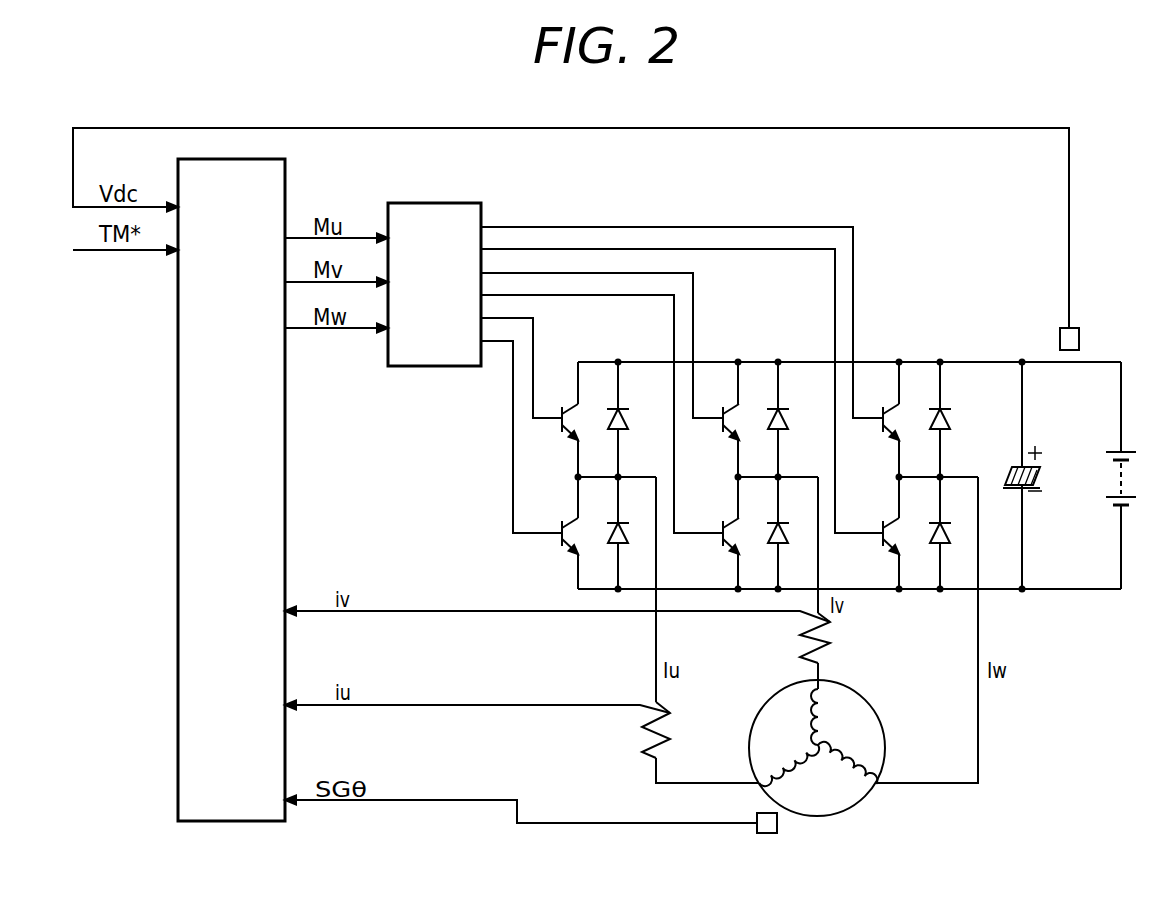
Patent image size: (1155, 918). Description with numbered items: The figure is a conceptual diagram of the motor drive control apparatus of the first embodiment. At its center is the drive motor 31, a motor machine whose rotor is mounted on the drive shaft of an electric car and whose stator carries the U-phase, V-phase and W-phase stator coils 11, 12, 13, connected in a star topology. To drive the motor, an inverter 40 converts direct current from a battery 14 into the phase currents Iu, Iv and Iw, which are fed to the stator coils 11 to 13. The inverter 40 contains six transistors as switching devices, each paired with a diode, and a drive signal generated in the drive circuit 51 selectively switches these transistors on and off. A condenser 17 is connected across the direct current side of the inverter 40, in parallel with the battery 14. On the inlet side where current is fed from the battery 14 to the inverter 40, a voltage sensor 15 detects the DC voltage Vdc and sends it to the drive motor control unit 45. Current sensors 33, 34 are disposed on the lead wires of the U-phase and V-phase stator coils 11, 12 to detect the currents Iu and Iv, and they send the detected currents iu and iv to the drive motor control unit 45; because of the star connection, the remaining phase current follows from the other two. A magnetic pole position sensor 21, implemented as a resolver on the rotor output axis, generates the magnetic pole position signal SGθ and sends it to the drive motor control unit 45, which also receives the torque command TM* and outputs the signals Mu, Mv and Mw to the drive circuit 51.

The drive motor control unit 45 is at (285, 191).
The drive circuit 51 is at (440, 203).
The inverter 40 is at (880, 348).
The condenser 17 is at (1012, 468).
The battery 14 is at (1119, 448).
The voltage sensor 15 is at (1079, 340).
The drive motor 31 is at (842, 720).
The U-phase stator coil 11 is at (792, 768).
The V-phase stator coil 12 is at (812, 714).
The W-phase stator coil 13 is at (845, 752).
The current sensor 33 is at (642, 728).
The current sensor 34 is at (800, 637).
The magnetic pole position sensor 21 is at (775, 834).